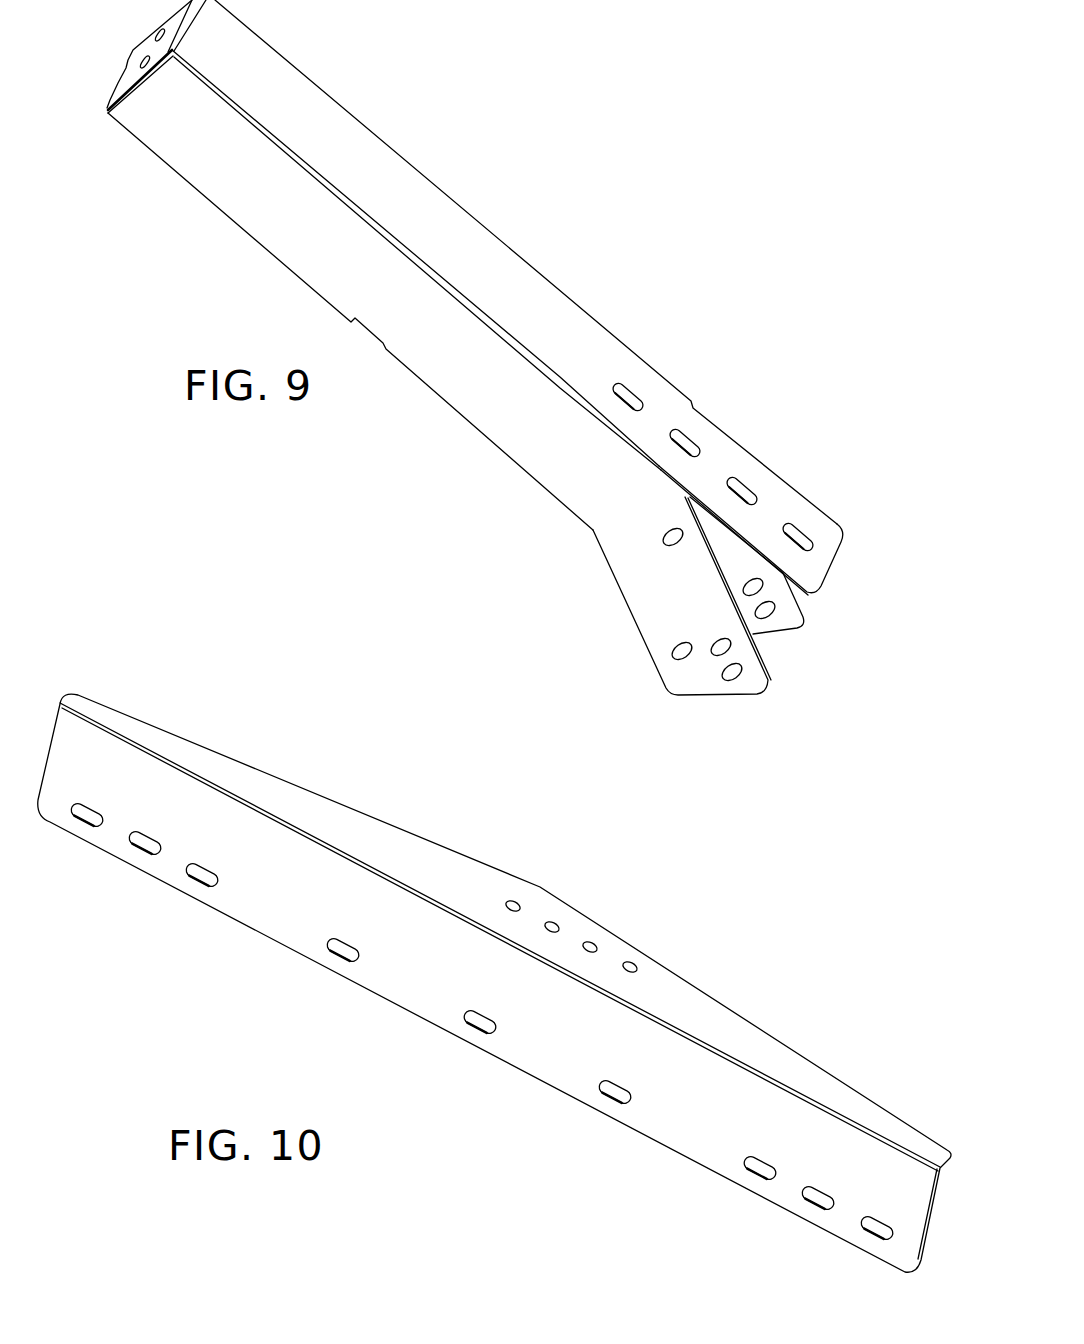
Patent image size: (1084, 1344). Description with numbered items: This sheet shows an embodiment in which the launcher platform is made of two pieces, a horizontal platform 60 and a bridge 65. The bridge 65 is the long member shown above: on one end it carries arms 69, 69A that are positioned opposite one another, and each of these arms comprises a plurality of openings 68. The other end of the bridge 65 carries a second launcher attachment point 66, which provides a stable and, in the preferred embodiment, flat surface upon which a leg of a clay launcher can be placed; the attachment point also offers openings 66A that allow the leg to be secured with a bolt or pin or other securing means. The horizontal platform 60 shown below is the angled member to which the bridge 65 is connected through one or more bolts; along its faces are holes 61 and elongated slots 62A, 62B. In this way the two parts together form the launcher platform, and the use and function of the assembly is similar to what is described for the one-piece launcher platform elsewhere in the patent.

In FIG. 9, the horizontal platform 60 is at (545, 732).
In FIG. 10, the horizontal platform 60 is at (745, 970).
In FIG. 10, the holes 61 is at (515, 900).
In FIG. 10, the slots 62A is at (85, 822).
In FIG. 10, the slots 62B is at (612, 1095).
In FIG. 9, the bridge 65 is at (541, 191).
In FIG. 9, the second launcher attachment point 66 is at (670, 304).
In FIG. 9, the flange slots 66A is at (634, 394).
In FIG. 9, the openings 68 is at (667, 550).
In FIG. 9, the arm 69 is at (650, 607).
In FIG. 9, the arm 69A is at (790, 620).